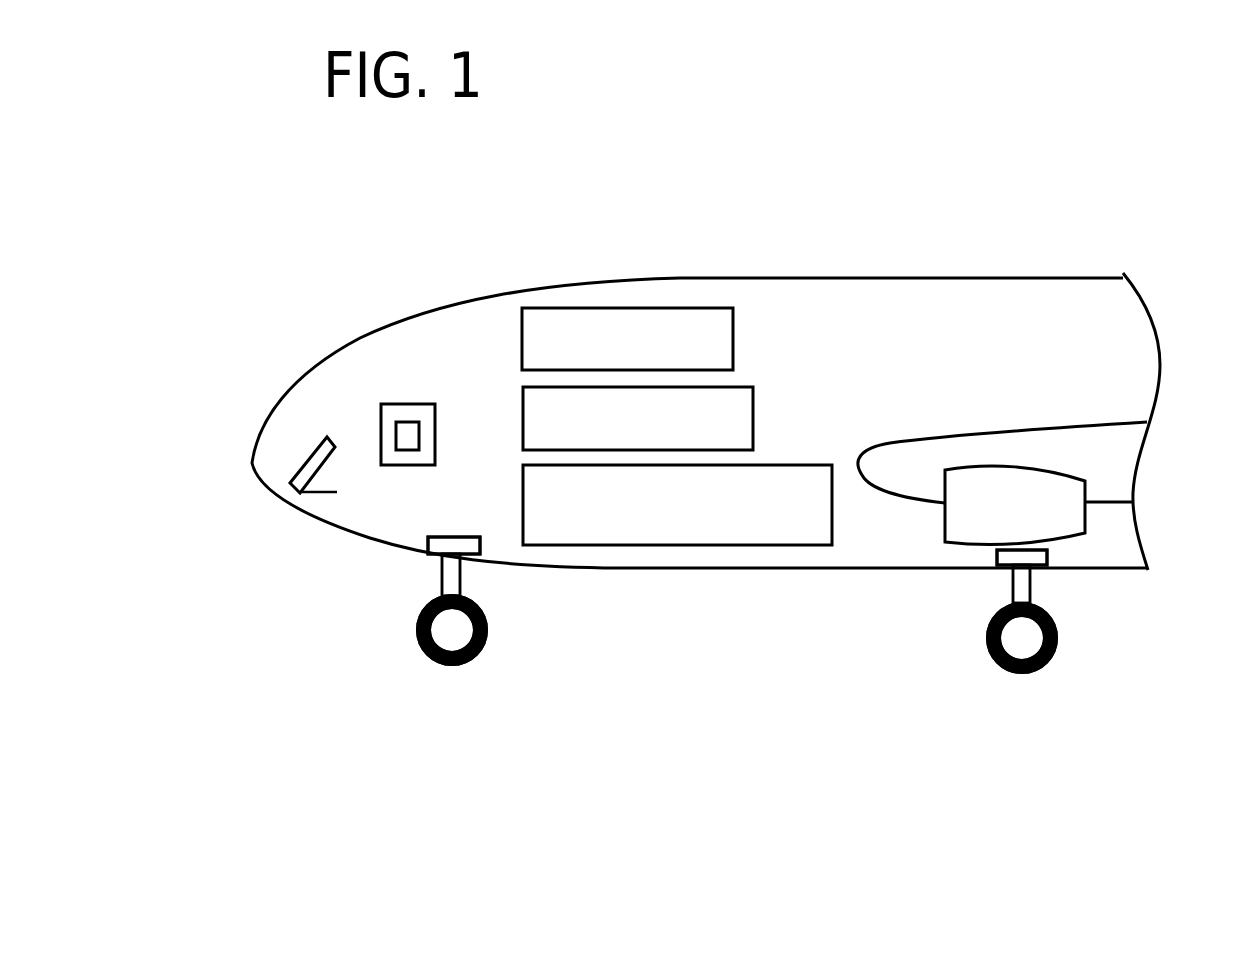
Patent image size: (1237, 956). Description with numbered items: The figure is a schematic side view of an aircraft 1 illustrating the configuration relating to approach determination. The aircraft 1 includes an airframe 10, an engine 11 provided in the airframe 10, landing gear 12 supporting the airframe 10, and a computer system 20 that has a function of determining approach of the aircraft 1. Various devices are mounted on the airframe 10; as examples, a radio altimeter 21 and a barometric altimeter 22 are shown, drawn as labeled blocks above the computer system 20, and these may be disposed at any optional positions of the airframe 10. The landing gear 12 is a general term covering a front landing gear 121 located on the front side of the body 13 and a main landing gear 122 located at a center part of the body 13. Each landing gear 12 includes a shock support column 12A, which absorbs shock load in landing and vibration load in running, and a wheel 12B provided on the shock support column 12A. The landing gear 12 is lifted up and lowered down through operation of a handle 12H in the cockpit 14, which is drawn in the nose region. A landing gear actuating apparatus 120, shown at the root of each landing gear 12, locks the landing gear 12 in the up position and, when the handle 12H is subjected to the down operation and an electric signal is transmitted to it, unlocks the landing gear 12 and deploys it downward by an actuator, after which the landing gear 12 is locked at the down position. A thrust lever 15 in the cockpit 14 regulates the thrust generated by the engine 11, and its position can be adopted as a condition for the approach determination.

The aircraft 1 is at (1108, 189).
The airframe 10 is at (980, 278).
The engine 11 is at (1013, 473).
The landing gear 12 is at (818, 602).
The front landing gear 121 is at (488, 659).
The main landing gear 122 is at (1064, 661).
The landing gear actuating apparatus 120 is at (453, 537).
The shock support column 12A is at (442, 578).
The wheel 12B is at (414, 628).
The handle 12H is at (410, 404).
The body 13 is at (851, 277).
The cockpit 14 is at (355, 357).
The thrust lever 15 is at (300, 470).
The computer system 20 is at (813, 465).
The radio altimeter 21 is at (735, 336).
The barometric altimeter 22 is at (755, 403).